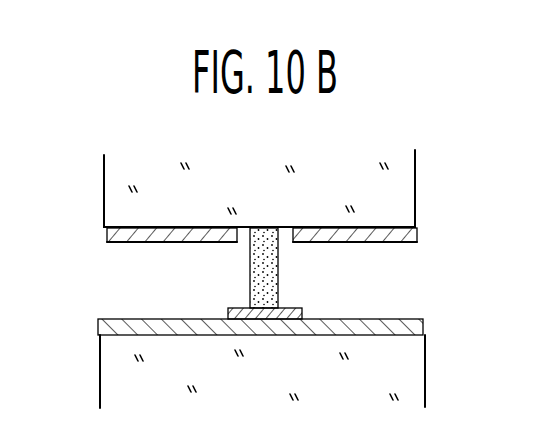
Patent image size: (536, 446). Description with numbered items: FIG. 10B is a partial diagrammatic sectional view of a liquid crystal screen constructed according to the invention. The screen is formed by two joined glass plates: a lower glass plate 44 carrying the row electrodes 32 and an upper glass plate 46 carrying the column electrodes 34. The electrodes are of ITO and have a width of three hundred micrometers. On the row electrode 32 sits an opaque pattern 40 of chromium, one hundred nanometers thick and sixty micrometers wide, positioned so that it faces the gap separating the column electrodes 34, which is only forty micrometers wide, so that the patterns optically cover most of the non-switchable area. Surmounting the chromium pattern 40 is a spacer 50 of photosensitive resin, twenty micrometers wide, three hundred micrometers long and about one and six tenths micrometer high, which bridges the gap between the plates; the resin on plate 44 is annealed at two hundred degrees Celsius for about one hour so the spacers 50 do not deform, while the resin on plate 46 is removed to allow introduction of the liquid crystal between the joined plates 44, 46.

The glass plate carrying the column electrodes 46 is at (130, 175).
The column electrodes 34 is at (398, 247).
The spacer 50 is at (272, 262).
The opaque pattern 40 is at (227, 312).
The row electrodes 32 is at (100, 318).
The glass plate carrying the row electrodes 44 is at (118, 390).